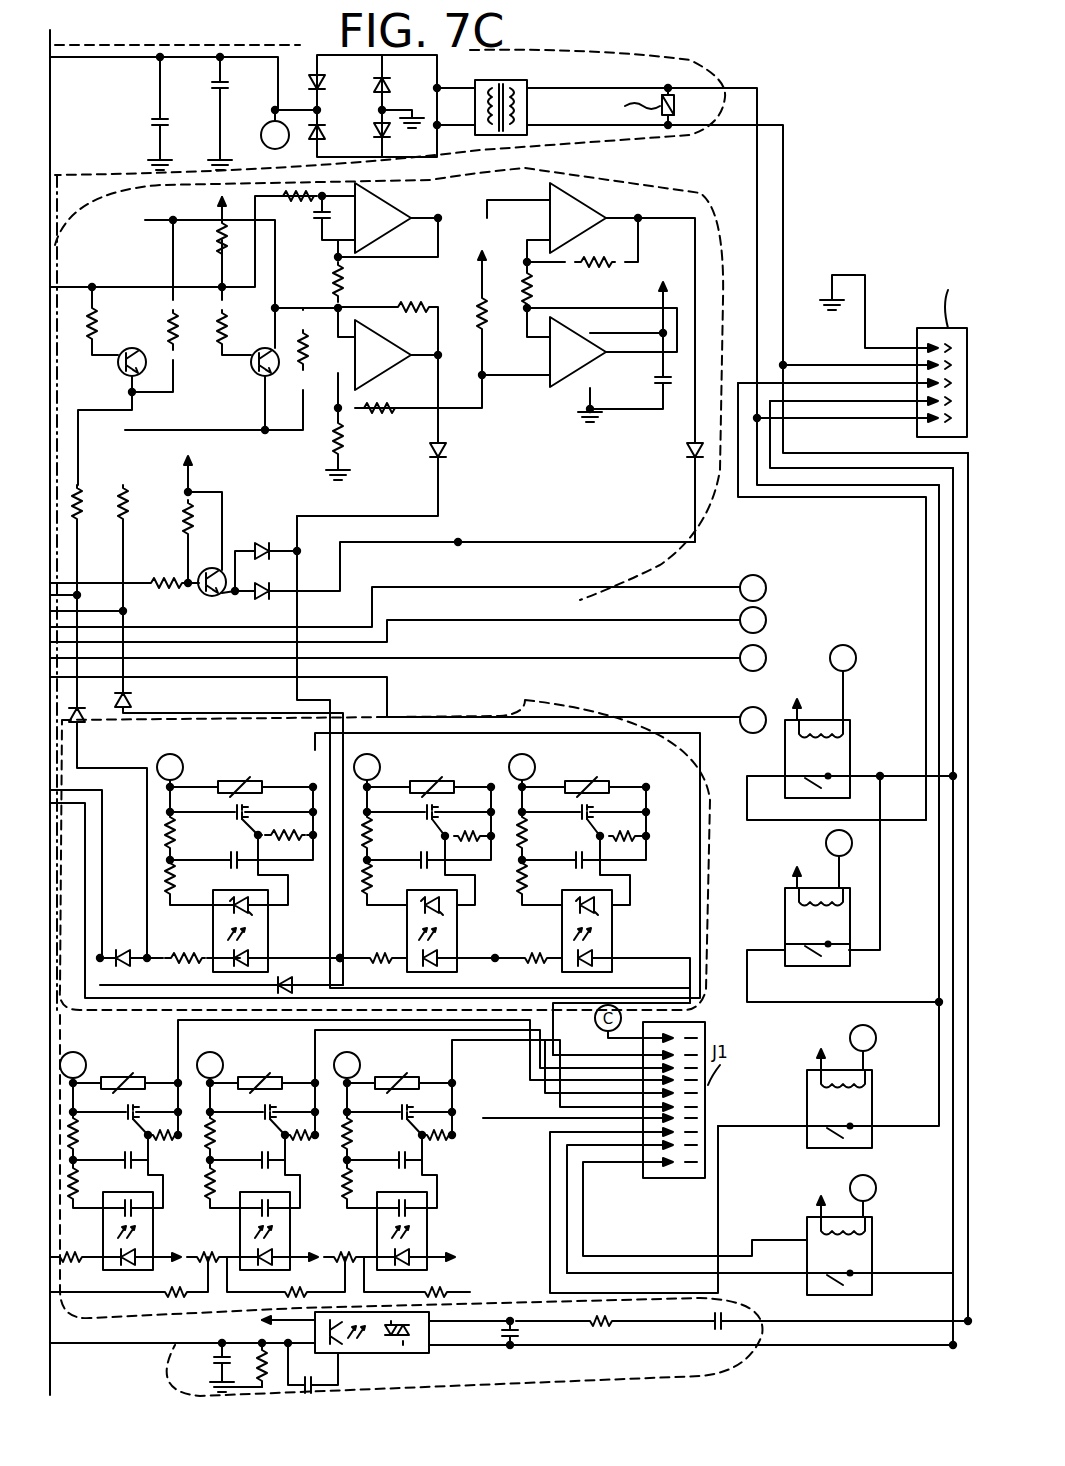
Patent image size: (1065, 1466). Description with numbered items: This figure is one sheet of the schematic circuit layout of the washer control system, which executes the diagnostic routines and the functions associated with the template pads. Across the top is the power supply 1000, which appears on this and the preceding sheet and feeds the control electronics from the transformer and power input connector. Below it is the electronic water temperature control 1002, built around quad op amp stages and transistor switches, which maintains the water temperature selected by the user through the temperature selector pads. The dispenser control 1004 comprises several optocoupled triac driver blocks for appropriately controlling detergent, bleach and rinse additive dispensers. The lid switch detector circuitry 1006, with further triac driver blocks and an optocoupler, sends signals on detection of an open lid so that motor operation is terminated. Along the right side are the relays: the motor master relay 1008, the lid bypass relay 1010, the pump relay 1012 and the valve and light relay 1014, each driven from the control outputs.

The power supply 1000 is at (141, 46).
The electronic water temperature control 1002 is at (703, 210).
The dispenser control 1004 is at (709, 876).
The lid switch detector circuitry 1006 is at (750, 1340).
The motor master relay 1008 is at (851, 760).
The lid bypass relay 1010 is at (785, 906).
The pump relay 1012 is at (807, 1105).
The valve and light relay 1014 is at (807, 1222).